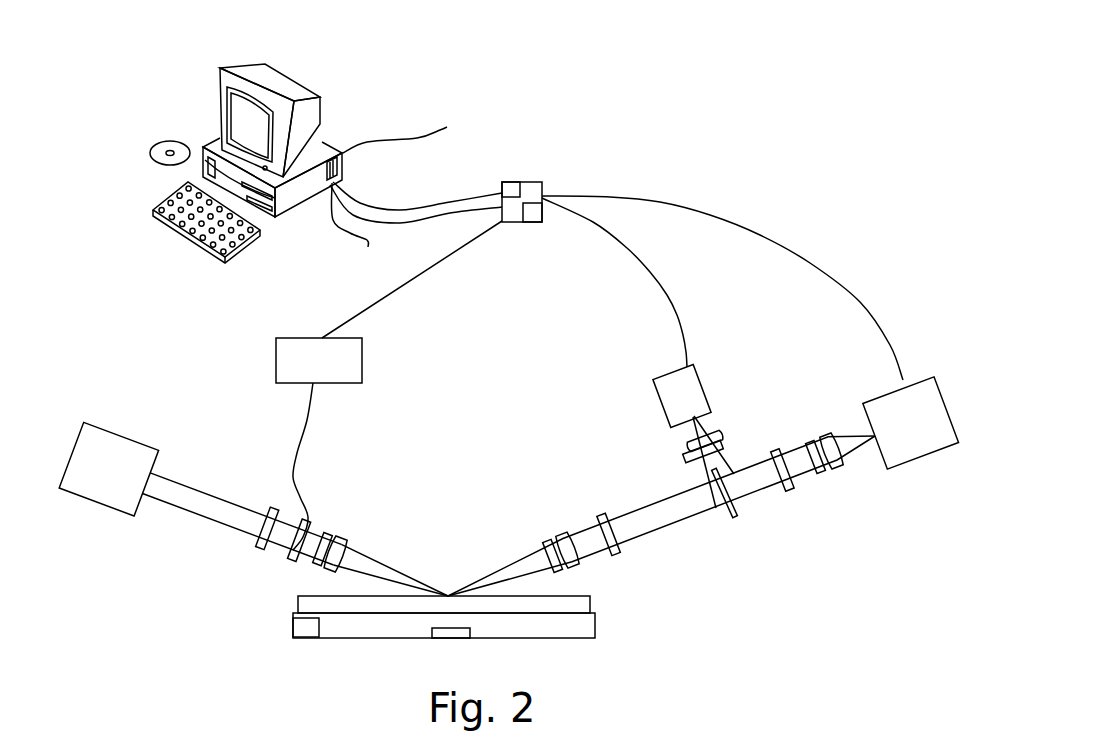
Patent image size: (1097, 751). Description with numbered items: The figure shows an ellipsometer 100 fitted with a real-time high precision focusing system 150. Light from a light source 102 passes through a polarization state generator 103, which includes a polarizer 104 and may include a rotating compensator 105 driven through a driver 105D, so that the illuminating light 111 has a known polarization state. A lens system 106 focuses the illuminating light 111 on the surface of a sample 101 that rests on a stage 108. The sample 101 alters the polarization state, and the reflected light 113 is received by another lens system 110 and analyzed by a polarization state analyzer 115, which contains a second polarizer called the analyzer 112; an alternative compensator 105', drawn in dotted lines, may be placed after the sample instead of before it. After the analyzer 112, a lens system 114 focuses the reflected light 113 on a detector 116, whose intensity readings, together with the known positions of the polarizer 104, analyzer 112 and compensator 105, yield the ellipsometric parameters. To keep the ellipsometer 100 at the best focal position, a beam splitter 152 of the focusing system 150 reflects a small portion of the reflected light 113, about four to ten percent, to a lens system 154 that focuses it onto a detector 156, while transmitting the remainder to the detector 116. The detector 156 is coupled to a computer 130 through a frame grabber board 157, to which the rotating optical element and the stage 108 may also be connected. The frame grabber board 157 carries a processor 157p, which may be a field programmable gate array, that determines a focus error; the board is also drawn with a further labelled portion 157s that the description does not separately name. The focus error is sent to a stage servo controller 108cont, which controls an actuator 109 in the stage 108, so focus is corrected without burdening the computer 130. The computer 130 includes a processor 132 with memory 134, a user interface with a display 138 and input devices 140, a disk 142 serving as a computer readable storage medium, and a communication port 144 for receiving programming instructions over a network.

The ellipsometer 100 is at (237, 377).
The sample 101 is at (298, 598).
The light source 102 is at (127, 438).
The polarization state generator 103 is at (227, 558).
The polarizer 104 is at (270, 507).
The rotating compensator 105 is at (247, 563).
The driver 105D is at (362, 377).
The compensator 105' is at (655, 552).
The lens system 106 is at (341, 539).
The stage 108 is at (432, 638).
The stage servo controller 108cont is at (296, 637).
The actuator 109 is at (470, 638).
The lens system 110 is at (578, 568).
The illuminating light 111 is at (398, 570).
The analyzer 112 is at (793, 487).
The reflected light 113 is at (497, 567).
The lens system 114 is at (820, 473).
The polarization state analyzer 115 is at (788, 594).
The detector 116 is at (893, 398).
The computer 130 is at (183, 55).
The processor 132 is at (337, 147).
The memory 134 is at (288, 197).
The display 138 is at (222, 72).
The input devices 140 is at (153, 207).
The disk 142 is at (153, 143).
The communication port 144 is at (395, 114).
The focusing system 150 is at (612, 377).
The beam splitter 152 is at (715, 515).
The lens system 154 is at (688, 454).
The detector 156 is at (708, 400).
The frame grabber board 157 is at (540, 180).
The processor 157p is at (502, 190).
The secondary controller portion 157s is at (538, 223).